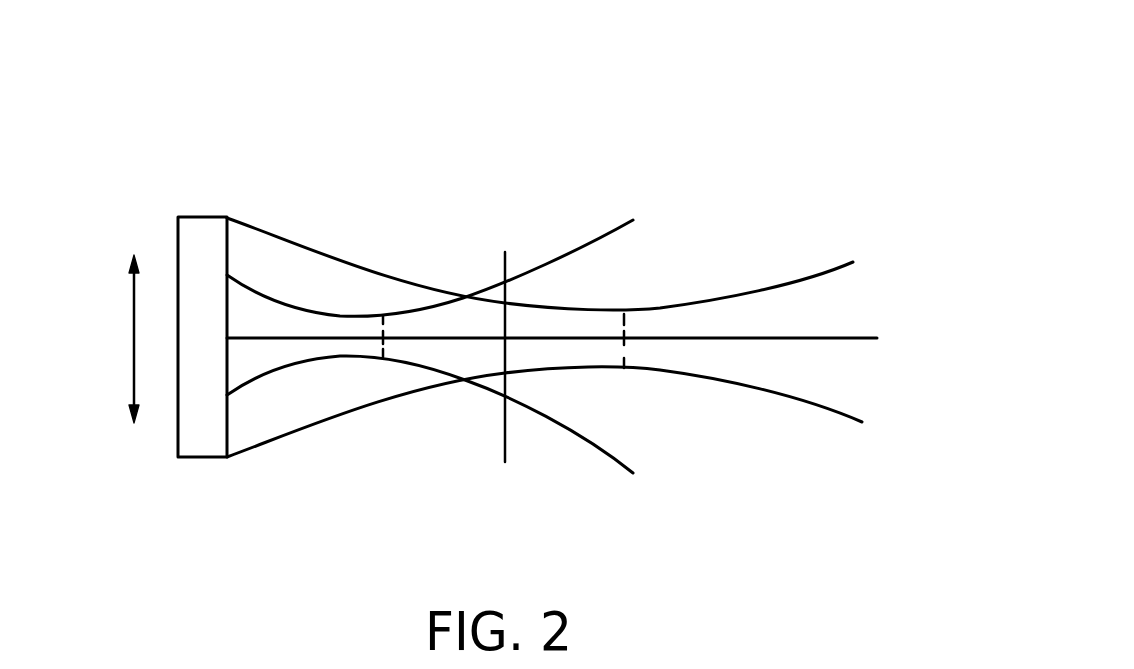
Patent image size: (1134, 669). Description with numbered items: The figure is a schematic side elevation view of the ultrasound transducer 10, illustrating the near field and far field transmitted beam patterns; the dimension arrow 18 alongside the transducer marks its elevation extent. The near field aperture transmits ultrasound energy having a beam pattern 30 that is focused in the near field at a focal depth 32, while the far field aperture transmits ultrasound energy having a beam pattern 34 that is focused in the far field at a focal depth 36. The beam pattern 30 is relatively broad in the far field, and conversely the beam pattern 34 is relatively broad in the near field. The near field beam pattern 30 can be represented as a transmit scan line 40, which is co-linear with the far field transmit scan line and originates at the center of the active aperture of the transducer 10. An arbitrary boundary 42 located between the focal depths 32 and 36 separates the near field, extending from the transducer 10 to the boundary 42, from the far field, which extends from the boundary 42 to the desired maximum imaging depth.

The transducer 10 is at (208, 217).
The transducer aperture height 18 is at (132, 329).
The near field beam pattern 30 is at (290, 305).
The near field focal depth 32 is at (383, 350).
The far field beam pattern 34 is at (385, 278).
The far field focal depth 36 is at (624, 358).
The near field transmit scan line 40 is at (596, 308).
The boundary 42 is at (507, 445).